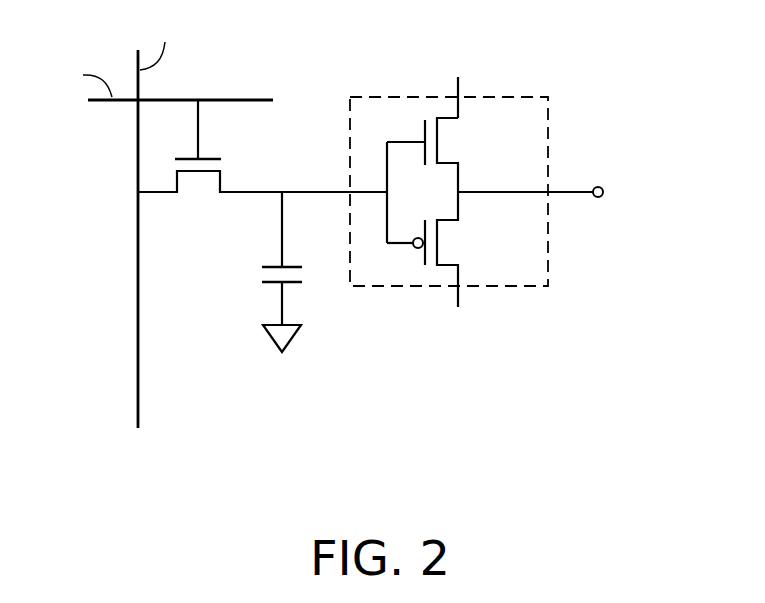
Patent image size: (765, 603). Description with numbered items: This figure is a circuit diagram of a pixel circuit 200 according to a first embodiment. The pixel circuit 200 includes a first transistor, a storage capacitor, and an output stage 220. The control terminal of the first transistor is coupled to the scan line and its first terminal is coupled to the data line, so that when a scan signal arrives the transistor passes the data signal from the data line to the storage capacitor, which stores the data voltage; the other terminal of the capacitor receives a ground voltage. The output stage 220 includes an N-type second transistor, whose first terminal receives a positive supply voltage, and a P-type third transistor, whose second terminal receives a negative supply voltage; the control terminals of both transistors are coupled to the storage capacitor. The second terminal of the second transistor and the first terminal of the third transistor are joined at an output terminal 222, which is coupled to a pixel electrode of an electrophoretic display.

The pixel circuit 200 is at (371, 233).
The output stage 220 is at (500, 95).
The output terminal 222 is at (602, 188).